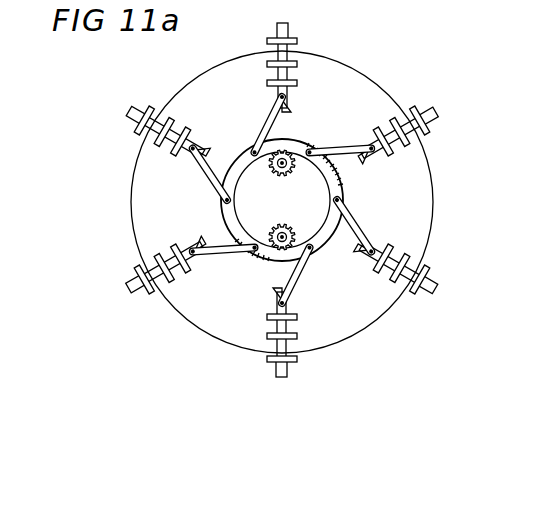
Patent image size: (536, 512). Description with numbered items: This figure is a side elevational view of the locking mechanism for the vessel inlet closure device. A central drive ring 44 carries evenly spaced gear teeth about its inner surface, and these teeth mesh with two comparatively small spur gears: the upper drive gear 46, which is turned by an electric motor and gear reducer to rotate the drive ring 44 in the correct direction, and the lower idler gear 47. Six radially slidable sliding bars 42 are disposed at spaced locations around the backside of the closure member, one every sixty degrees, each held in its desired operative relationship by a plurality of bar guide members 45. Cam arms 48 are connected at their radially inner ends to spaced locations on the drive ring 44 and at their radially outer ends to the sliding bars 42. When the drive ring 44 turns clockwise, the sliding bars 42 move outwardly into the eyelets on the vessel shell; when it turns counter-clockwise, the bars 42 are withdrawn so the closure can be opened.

The sliding bars 42 is at (284, 33).
The drive ring 44 is at (230, 224).
The bar guide members 45 is at (275, 65).
The drive gear 46 is at (293, 155).
The idler gear 47 is at (271, 250).
The cam arms 48 is at (270, 126).